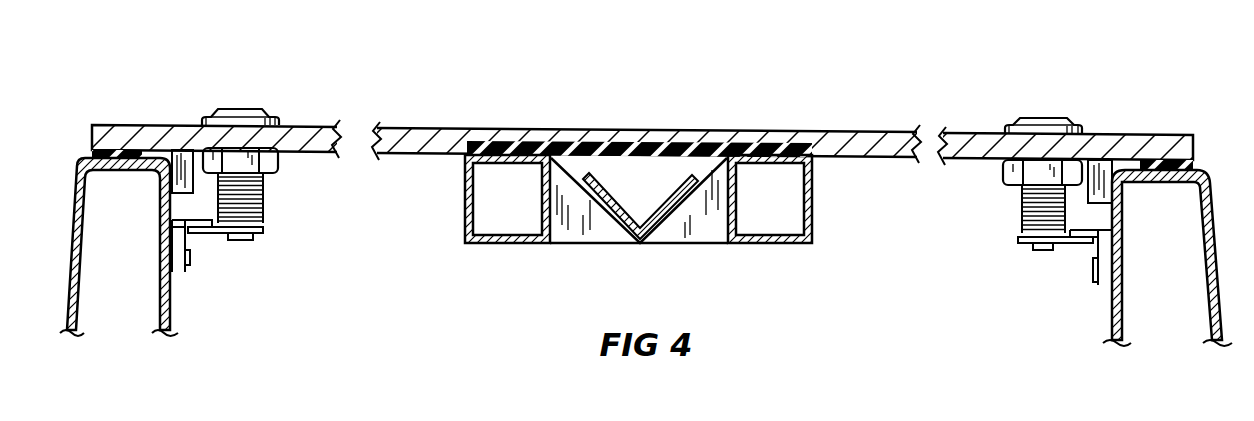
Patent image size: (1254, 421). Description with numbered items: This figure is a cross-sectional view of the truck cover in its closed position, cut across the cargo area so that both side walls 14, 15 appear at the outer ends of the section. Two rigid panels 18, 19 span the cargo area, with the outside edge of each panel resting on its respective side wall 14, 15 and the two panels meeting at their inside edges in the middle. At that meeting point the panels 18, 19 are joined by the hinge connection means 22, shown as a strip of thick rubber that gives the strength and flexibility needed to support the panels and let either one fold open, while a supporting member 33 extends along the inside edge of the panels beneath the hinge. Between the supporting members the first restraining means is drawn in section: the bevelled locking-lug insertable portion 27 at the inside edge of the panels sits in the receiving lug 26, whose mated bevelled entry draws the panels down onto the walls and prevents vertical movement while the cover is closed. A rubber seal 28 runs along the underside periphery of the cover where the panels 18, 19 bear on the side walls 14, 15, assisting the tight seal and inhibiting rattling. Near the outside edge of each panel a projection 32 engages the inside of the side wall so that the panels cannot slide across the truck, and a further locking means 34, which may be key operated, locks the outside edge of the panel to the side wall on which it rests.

The side wall 14 is at (1175, 302).
The side wall 15 is at (130, 282).
The panel 18 is at (1137, 150).
The panel 19 is at (140, 132).
The hinge connection means 22 is at (672, 130).
The receiving lug 26 is at (648, 233).
The locking-lug insertable portion 27 is at (578, 225).
The rubber seal 28 is at (118, 156).
The projection 32 is at (1107, 185).
The supporting member 33 is at (810, 245).
The locking means 34 is at (1040, 122).